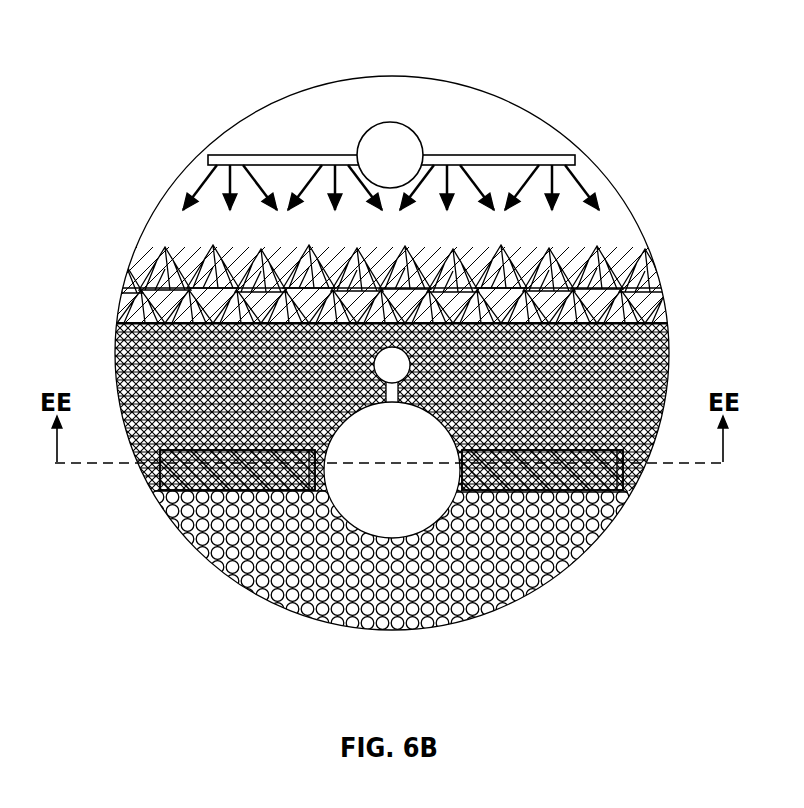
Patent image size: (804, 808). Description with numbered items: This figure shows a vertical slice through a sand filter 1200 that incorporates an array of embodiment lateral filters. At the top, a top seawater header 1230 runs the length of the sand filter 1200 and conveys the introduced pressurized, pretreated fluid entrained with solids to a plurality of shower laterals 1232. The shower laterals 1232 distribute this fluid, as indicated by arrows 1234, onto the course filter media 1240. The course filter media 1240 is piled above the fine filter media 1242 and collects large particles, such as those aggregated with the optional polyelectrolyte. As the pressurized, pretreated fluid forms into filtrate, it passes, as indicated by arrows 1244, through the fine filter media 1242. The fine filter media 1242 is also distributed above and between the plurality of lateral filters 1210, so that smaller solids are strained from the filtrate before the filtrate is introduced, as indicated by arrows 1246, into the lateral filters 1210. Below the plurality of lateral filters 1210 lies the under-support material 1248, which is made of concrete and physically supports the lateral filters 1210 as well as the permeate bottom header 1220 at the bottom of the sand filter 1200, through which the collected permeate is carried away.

The sand filter 1200 is at (600, 85).
The lateral filters 1210 is at (232, 486).
The permeate bottom header 1220 is at (405, 540).
The top seawater header 1230 is at (390, 122).
The shower laterals 1232 is at (223, 155).
The arrows (distribution of fluid) 1234 is at (196, 190).
The course filter media 1240 is at (188, 250).
The fine filter media 1242 is at (113, 365).
The arrows (fluid passage) 1244 is at (237, 370).
The arrows (filtrate introduction) 1246 is at (532, 456).
The under-support material 1248 is at (246, 571).